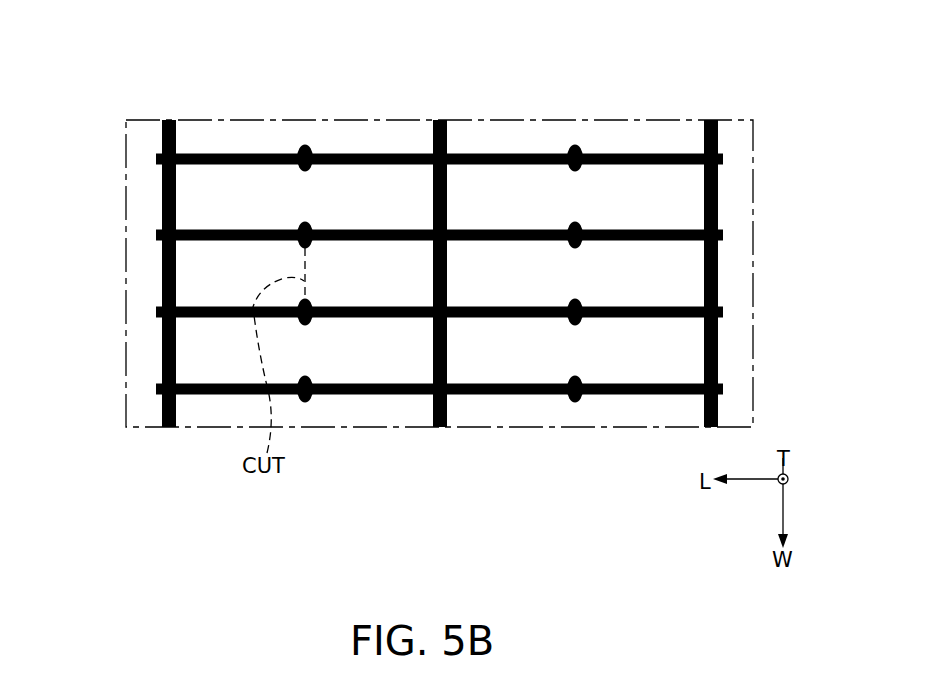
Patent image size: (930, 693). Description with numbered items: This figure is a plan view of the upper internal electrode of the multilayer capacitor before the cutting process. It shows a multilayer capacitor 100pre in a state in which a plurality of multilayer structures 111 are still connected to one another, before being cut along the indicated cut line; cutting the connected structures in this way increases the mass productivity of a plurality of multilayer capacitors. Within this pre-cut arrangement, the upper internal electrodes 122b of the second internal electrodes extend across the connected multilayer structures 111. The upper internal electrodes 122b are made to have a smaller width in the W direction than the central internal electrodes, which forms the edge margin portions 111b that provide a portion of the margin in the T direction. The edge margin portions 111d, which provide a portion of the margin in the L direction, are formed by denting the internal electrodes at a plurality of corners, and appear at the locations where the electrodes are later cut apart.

The multilayer capacitor before cutting process 100pre is at (160, 31).
The multilayer structure 111 is at (161, 267).
The edge margin portion 111b is at (258, 232).
The edge margin portion 111d is at (305, 223).
The upper internal electrode 122b is at (199, 276).